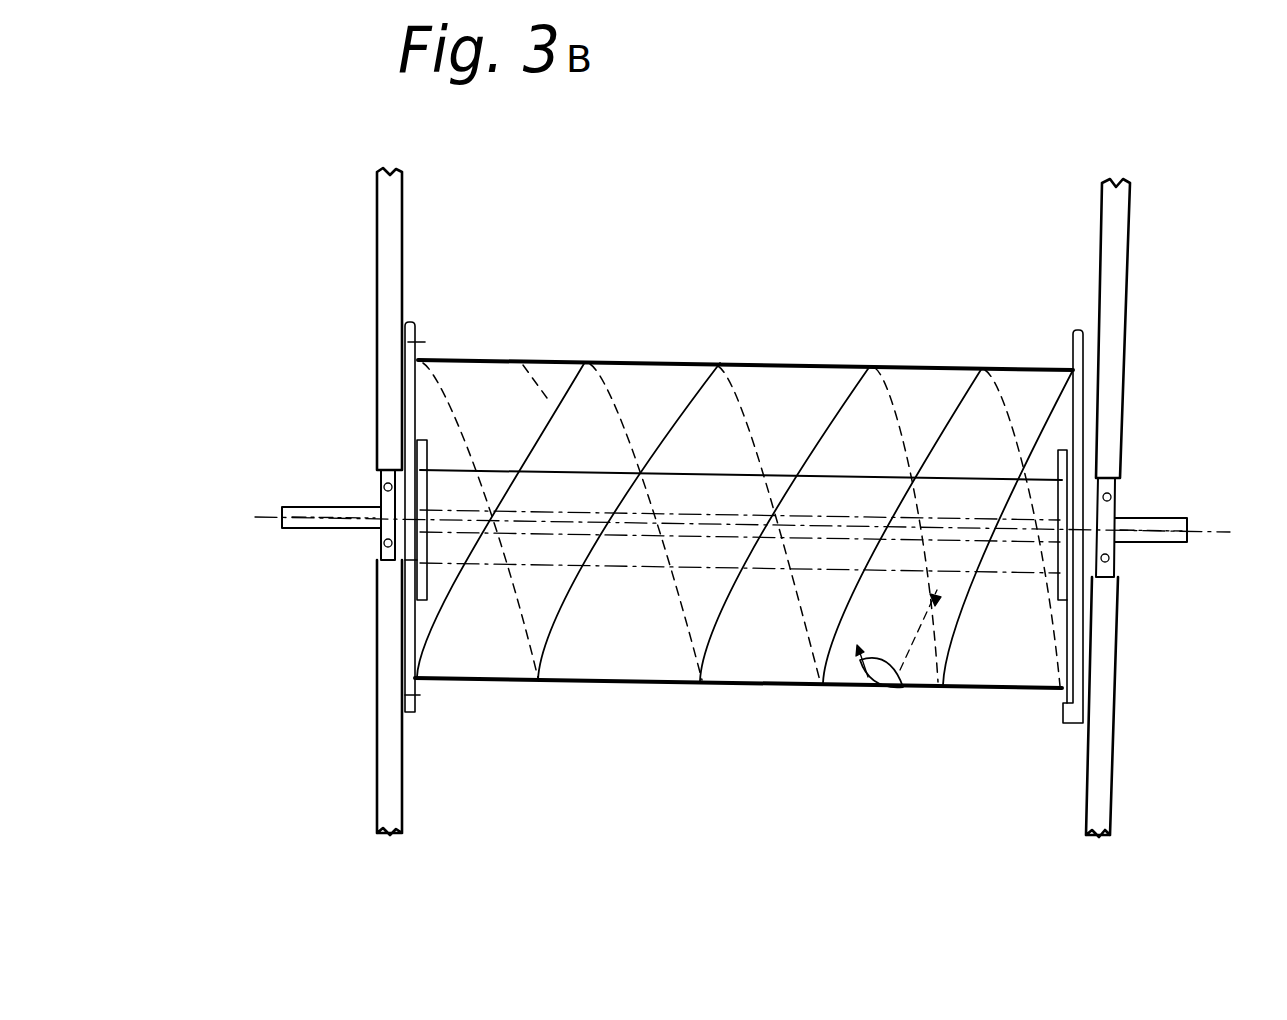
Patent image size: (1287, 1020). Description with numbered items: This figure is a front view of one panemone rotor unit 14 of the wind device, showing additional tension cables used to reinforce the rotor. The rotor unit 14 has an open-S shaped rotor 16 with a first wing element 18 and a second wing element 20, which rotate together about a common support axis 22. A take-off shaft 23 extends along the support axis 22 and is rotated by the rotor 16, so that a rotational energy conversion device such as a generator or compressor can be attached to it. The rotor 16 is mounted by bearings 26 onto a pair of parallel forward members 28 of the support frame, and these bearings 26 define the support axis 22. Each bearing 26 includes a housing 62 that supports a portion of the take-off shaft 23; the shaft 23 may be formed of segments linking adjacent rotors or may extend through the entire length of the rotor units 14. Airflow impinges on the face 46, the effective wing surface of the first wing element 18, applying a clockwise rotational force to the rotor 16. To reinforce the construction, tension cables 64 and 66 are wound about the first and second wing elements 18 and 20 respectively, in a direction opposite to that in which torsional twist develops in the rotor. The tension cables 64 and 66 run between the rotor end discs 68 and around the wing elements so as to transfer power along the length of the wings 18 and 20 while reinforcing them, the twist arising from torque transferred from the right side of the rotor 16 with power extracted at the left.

The panemone rotor unit 14 is at (632, 796).
The rotor 16 is at (1027, 690).
The first wing element 18 is at (885, 365).
The second wing element 20 is at (770, 665).
The support axis 22 is at (270, 516).
The take-off shaft 23 is at (315, 530).
The bearing 26 is at (378, 530).
The forward member 28 is at (390, 742).
The face 46 is at (1012, 394).
The housing 62 is at (377, 489).
The tension cable 64 is at (893, 685).
The tension cable 66 is at (480, 399).
The rotor end disc 68 is at (413, 712).